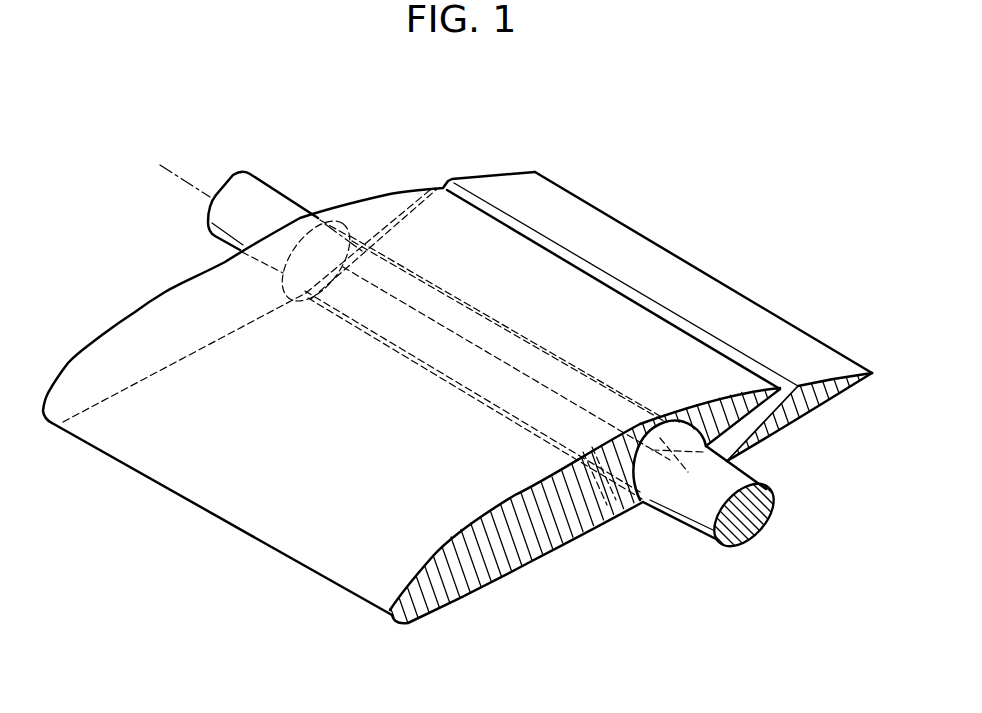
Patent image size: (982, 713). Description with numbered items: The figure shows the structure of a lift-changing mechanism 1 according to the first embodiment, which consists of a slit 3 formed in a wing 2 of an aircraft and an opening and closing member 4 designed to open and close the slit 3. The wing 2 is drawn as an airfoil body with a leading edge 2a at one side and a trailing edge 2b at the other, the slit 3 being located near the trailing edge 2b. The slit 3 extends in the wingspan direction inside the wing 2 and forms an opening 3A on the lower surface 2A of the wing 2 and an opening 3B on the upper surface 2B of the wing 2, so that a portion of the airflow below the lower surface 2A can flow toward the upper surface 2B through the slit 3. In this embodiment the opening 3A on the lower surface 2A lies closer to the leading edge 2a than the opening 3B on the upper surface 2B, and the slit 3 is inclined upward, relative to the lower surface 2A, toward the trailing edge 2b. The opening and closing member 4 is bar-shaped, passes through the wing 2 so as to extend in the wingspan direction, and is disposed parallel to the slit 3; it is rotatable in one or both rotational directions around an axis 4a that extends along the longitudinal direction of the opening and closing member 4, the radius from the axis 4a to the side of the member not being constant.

The lift-changing mechanism 1 is at (539, 109).
The wing 2 is at (220, 380).
The leading edge 2a is at (203, 512).
The trailing edge 2b is at (748, 295).
The lower surface 2A is at (493, 583).
The upper surface 2B is at (368, 542).
The slit 3 is at (752, 418).
The opening 3A is at (567, 423).
The opening 3B is at (612, 282).
The opening and closing member 4 is at (700, 523).
The axis 4a is at (770, 525).